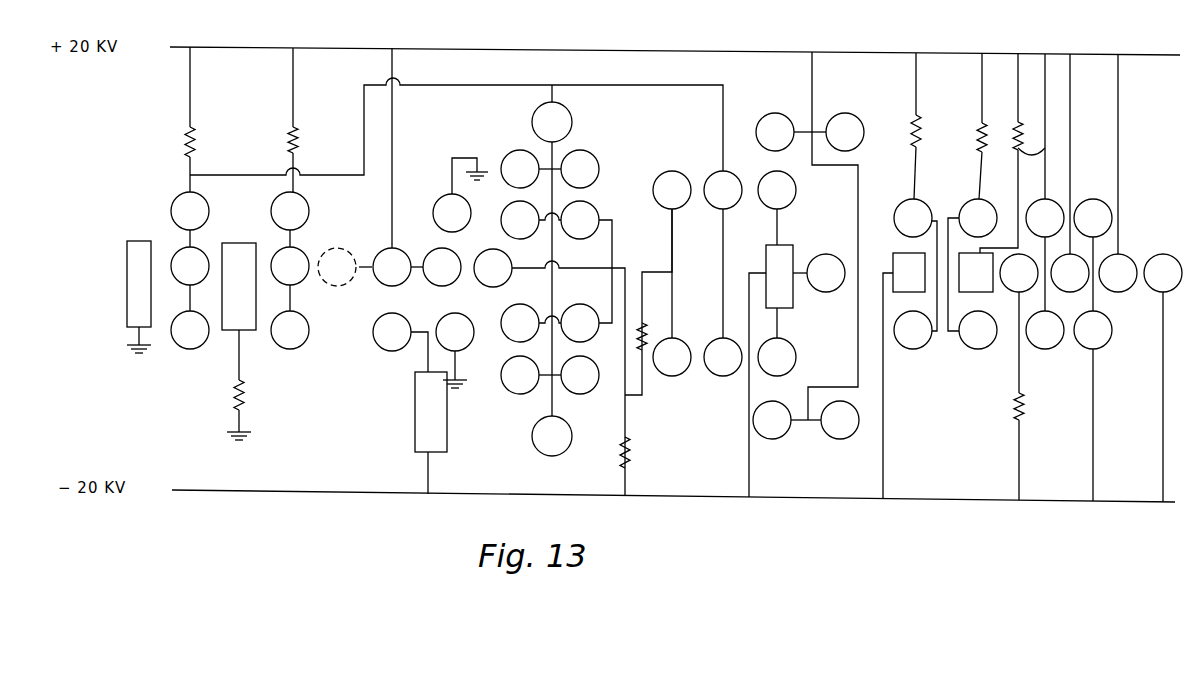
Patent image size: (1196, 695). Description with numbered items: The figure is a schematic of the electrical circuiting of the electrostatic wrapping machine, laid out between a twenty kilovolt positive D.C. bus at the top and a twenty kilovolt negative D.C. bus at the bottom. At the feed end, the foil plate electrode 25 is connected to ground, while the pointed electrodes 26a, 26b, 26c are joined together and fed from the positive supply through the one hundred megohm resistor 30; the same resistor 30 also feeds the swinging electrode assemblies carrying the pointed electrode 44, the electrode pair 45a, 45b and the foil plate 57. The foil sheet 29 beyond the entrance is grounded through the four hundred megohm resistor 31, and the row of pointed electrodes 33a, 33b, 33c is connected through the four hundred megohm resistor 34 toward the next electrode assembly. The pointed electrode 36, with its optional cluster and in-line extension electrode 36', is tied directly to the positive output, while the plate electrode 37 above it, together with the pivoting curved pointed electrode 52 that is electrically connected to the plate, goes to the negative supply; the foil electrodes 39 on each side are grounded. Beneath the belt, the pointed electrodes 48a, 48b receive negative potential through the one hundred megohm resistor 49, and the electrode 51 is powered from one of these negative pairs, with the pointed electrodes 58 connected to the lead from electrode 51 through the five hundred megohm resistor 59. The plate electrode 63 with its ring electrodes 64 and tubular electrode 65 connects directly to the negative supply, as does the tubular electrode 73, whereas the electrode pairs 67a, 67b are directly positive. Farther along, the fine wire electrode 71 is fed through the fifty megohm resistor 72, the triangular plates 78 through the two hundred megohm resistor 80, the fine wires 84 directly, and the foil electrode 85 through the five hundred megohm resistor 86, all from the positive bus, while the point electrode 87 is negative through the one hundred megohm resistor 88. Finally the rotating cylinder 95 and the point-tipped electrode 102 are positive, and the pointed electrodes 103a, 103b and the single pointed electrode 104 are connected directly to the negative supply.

The electrode 25 is at (139, 297).
The pointed electrode 26a is at (190, 330).
The pointed electrode 26b is at (190, 279).
The pointed electrode 26c is at (190, 219).
The aluminum foil sheet 29 is at (239, 286).
The resistor 30 is at (194, 146).
The resistor 31 is at (242, 402).
The pointed electrode 33a is at (290, 330).
The pointed electrode 33b is at (290, 279).
The pointed electrode 33c is at (290, 219).
The resistor 34 is at (298, 142).
The pointed electrode 36 is at (370, 267).
The pointed electrode 36' is at (442, 267).
The plate electrode 37 is at (431, 433).
The aluminum foil electrode 39 is at (460, 273).
The pointed electrode 44 is at (552, 270).
The pointed electrode 45a is at (531, 272).
The pointed electrode 45b is at (580, 272).
The pointed electrode 48a is at (531, 271).
The pointed electrode 48b is at (586, 271).
The resistor 49 is at (628, 442).
The electrode 51 is at (493, 268).
The curved pointed electrode 52 is at (400, 342).
The metal foil plate 57 is at (723, 273).
The pointed electrode 58 is at (672, 273).
The resistor 59 is at (648, 333).
The plate electrode 63 is at (786, 276).
The ring electrode 64 is at (777, 273).
The tubular electrode 65 is at (826, 273).
The pointed electrode 67a is at (789, 276).
The pointed electrode 67b is at (842, 276).
The fine wire electrode 71 is at (915, 274).
The resistor 72 is at (912, 127).
The tubular electrode 73 is at (909, 272).
The right triangular plate 78 is at (972, 274).
The resistor 80 is at (980, 149).
The fine wire 84 is at (1045, 201).
The foil electrode 85 is at (988, 221).
The resistor 86 is at (1016, 130).
The point electrode 87 is at (1019, 377).
The resistor 88 is at (1022, 419).
The cylindrical metal tube 95 is at (1118, 173).
The point-tipped electrode 102 is at (1070, 173).
The pointed electrode 103a is at (1093, 255).
The pointed electrode 103b is at (1093, 406).
The pointed electrode 104 is at (1163, 378).